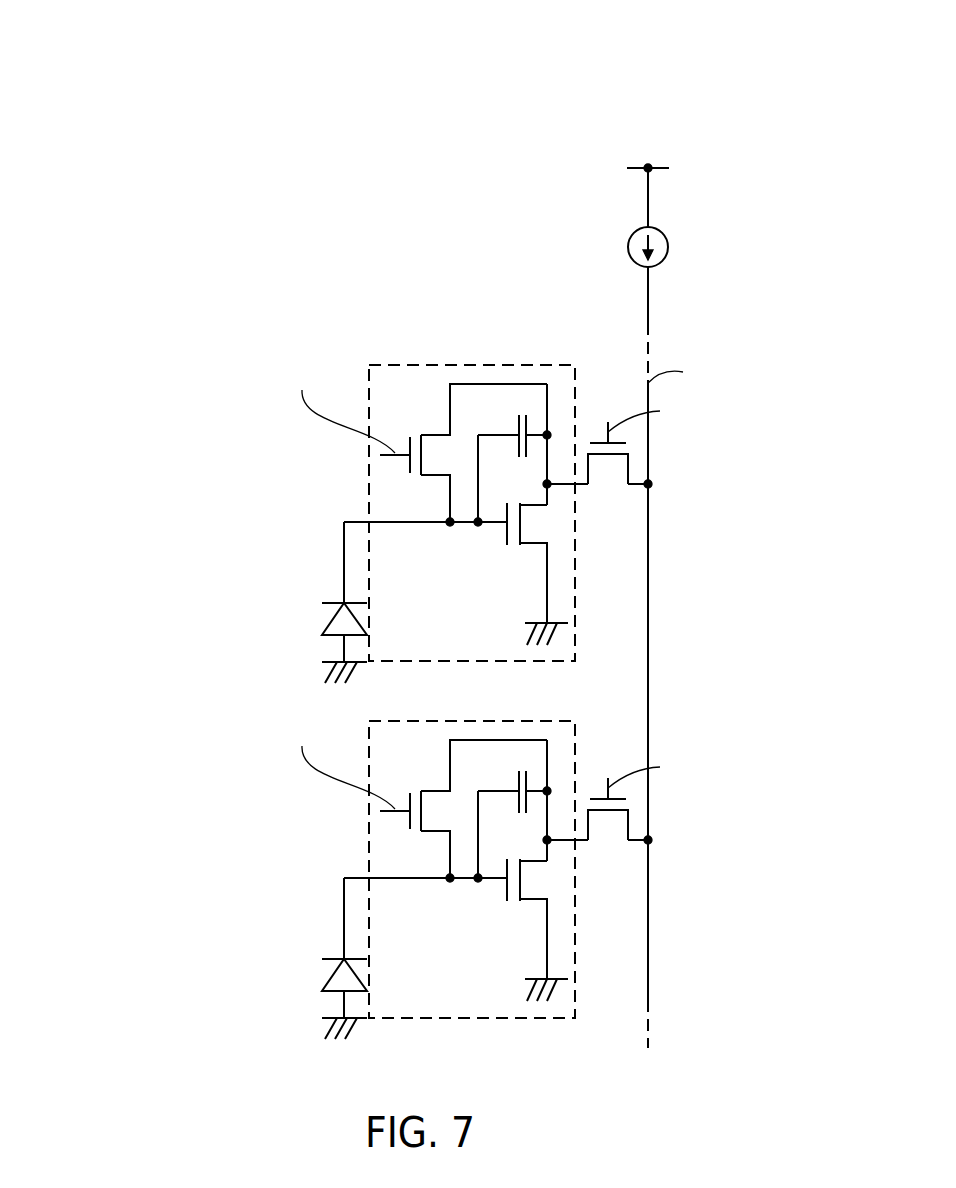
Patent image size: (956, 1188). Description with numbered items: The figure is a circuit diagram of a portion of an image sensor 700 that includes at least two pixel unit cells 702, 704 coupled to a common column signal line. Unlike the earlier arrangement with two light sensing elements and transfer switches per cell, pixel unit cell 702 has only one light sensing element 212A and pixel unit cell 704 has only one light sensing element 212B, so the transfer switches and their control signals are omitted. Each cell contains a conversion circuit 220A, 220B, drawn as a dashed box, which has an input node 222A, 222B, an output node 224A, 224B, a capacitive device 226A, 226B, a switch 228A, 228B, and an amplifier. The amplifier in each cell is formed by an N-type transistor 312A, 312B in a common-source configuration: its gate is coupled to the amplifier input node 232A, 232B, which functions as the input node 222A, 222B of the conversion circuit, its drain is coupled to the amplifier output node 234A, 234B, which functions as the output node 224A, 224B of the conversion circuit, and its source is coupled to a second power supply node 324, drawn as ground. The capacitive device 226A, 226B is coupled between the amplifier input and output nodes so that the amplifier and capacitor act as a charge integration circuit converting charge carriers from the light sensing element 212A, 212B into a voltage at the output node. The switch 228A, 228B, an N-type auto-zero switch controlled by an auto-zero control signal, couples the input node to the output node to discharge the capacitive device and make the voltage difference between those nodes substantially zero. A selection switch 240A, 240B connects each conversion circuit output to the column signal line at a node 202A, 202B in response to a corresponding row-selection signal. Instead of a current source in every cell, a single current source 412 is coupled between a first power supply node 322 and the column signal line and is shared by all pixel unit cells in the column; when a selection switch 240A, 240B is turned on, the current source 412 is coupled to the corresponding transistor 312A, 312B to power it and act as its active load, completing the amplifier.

The image sensor 700 is at (814, 94).
The pixel unit cell 702 is at (131, 504).
The pixel unit cell 704 is at (131, 839).
The first power supply node 322 is at (648, 165).
The current source 412 is at (668, 246).
The node 202A is at (648, 484).
The node 202B is at (648, 840).
The light sensing element 212A is at (328, 625).
The light sensing element 212B is at (328, 981).
The conversion circuit 220A is at (465, 661).
The conversion circuit 220B is at (465, 1018).
The input node 222A is at (427, 551).
The input node 232A is at (478, 527).
The input node 222B is at (427, 907).
The input node 232B is at (478, 883).
The output node 224A is at (591, 405).
The output node 234A is at (547, 484).
The output node 224B is at (657, 772).
The output node 234B is at (547, 840).
The capacitive device 226A is at (517, 420).
The capacitive device 226B is at (517, 776).
The switch 228A is at (434, 433).
The switch 228B is at (434, 789).
The selection switch 240A is at (603, 477).
The selection switch 240B is at (603, 833).
The N-type transistor 312A is at (533, 548).
The N-type transistor 312B is at (533, 904).
The second power supply node 324 is at (560, 626).